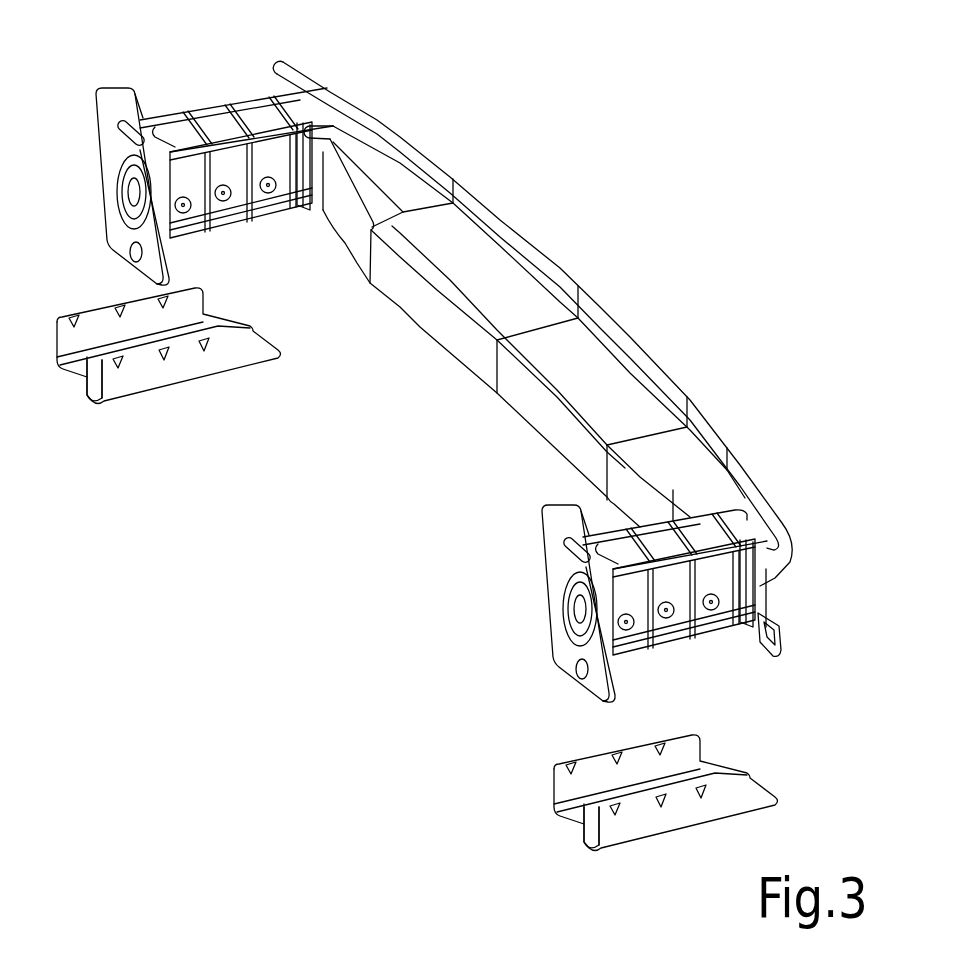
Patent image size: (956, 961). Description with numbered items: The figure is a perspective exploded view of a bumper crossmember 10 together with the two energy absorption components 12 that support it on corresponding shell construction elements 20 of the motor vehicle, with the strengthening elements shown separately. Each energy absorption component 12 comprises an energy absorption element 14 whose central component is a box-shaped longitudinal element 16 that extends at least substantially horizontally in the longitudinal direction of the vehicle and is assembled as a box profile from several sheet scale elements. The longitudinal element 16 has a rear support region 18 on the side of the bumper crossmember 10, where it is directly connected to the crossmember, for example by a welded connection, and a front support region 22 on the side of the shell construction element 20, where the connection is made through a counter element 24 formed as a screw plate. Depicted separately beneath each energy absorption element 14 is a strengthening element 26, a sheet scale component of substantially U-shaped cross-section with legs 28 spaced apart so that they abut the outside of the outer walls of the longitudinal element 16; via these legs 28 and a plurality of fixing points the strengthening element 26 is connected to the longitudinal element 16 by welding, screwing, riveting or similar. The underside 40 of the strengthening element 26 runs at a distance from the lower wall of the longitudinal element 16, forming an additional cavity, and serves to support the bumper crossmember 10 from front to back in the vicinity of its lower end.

The bumper crossmember 10 is at (626, 256).
The energy absorption component 12 is at (469, 482).
The energy absorption element 14 is at (286, 235).
The longitudinal element 16 is at (213, 112).
The rear support region 18 is at (742, 627).
The shell construction element 20 is at (307, 944).
The front support region 22 is at (620, 653).
The counter element 24 is at (562, 640).
The strengthening element 26 is at (404, 592).
The legs 28 is at (90, 333).
The underside 40 is at (63, 388).